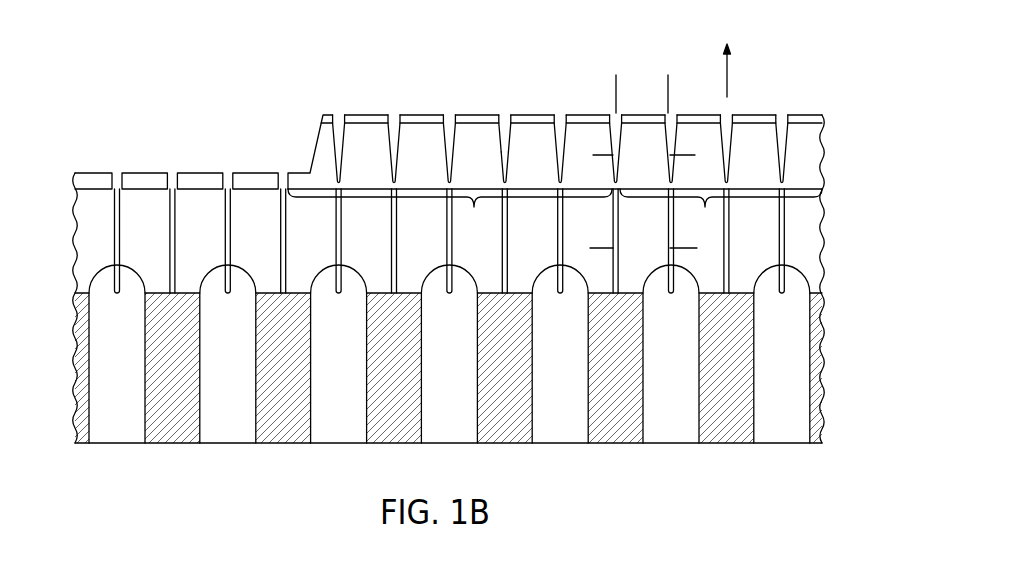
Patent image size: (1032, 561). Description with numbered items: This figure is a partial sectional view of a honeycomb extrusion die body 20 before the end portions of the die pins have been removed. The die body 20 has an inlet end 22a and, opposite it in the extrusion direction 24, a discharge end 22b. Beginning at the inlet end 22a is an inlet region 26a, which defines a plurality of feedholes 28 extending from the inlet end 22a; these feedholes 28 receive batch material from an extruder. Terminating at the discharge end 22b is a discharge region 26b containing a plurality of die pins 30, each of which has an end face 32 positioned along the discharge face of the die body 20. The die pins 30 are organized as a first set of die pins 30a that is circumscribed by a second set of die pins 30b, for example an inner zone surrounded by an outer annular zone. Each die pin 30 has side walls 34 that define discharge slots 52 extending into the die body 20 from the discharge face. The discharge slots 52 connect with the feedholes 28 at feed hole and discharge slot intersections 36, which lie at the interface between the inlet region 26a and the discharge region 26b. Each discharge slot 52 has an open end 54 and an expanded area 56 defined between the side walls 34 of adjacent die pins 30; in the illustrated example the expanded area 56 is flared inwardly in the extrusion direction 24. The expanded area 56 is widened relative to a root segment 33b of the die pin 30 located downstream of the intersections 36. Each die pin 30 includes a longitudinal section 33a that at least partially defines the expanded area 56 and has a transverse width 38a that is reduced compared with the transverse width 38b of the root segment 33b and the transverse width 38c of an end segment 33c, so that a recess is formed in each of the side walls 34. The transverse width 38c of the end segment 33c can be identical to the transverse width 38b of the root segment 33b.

The die body 20 is at (65, 237).
The inlet end 22a is at (724, 443).
The discharge end 22b is at (747, 113).
The extrusion direction 24 is at (724, 62).
The inlet region 26a is at (838, 293).
The discharge region 26b is at (838, 115).
The feedhole 28 is at (810, 438).
The die pin 30 is at (356, 110).
The first set of die pins 30a is at (721, 215).
The second set of die pins 30b is at (450, 213).
The end face 32 is at (372, 111).
The longitudinal section 33a is at (823, 162).
The root segment 33b is at (827, 243).
The end segment 33c is at (828, 115).
The side wall 34 is at (395, 246).
The feed hole and discharge slot intersection 36 is at (129, 293).
The transverse width of longitudinal section 38a is at (670, 155).
The transverse width of root segment 38b is at (613, 248).
The transverse width of end segment 38c is at (697, 82).
The discharge slot 52 is at (507, 254).
The open end 54 is at (506, 113).
The expanded area 56 is at (510, 172).